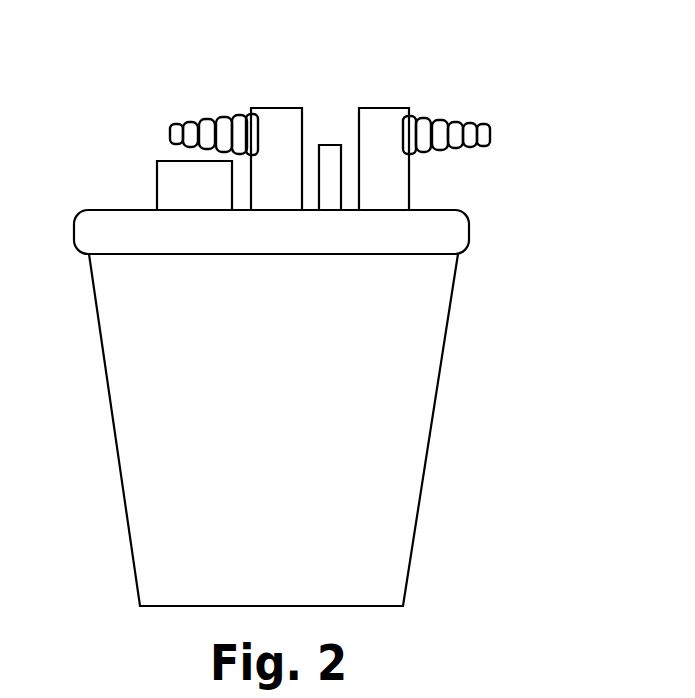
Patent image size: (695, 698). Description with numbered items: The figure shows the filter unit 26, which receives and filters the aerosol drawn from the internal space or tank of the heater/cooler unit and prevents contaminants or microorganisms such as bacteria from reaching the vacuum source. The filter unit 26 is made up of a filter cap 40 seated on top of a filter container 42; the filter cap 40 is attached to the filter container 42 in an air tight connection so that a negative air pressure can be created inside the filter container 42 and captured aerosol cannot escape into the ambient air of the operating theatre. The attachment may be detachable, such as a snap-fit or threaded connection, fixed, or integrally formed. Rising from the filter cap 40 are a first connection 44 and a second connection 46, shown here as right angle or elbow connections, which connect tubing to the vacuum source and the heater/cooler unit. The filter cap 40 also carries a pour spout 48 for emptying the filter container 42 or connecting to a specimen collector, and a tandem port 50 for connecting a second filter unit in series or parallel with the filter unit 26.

The filter unit 26 is at (582, 68).
The filter cap 40 is at (115, 218).
The filter container 42 is at (120, 410).
The first connection 44 is at (278, 122).
The second connection 46 is at (385, 120).
The pour spout 48 is at (163, 168).
The tandem port 50 is at (332, 152).